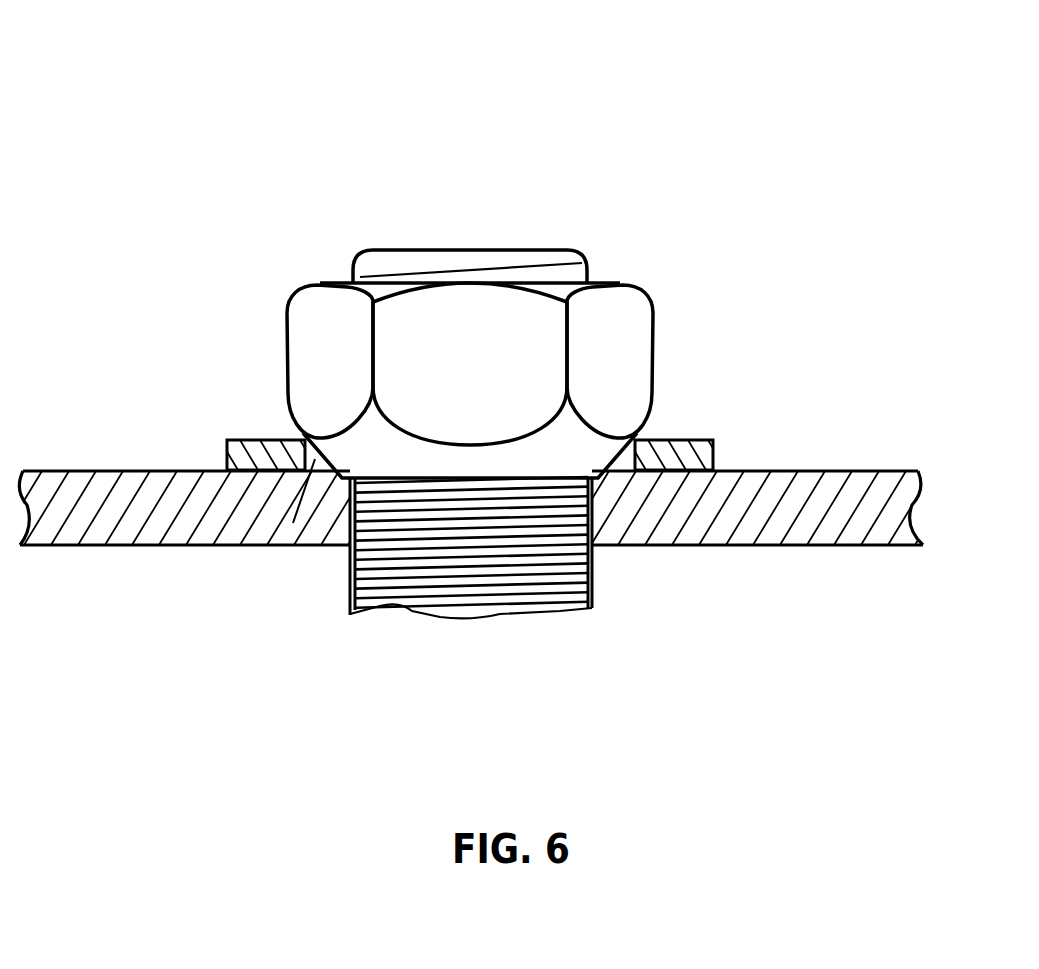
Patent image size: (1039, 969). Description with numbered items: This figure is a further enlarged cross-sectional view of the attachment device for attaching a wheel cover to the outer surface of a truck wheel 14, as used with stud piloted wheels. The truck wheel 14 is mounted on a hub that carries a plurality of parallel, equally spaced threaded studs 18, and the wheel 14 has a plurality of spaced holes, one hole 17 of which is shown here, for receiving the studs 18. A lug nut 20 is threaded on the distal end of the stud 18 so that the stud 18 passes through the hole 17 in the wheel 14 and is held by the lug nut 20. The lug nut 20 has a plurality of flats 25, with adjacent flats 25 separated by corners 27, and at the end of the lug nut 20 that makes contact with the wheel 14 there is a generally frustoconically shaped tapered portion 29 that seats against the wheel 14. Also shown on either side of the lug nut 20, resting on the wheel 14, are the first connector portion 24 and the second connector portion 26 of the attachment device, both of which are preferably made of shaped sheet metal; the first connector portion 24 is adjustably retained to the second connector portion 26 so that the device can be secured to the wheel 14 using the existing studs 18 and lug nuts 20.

The truck wheel 14 is at (855, 462).
The hole 17 is at (479, 583).
The threaded stud 18 is at (353, 563).
The lug nut 20 is at (539, 287).
The first connector portion 24 is at (240, 440).
The flats 25 is at (608, 357).
The second connector portion 26 is at (693, 430).
The corners 27 is at (563, 338).
The tapered portion 29 is at (287, 522).